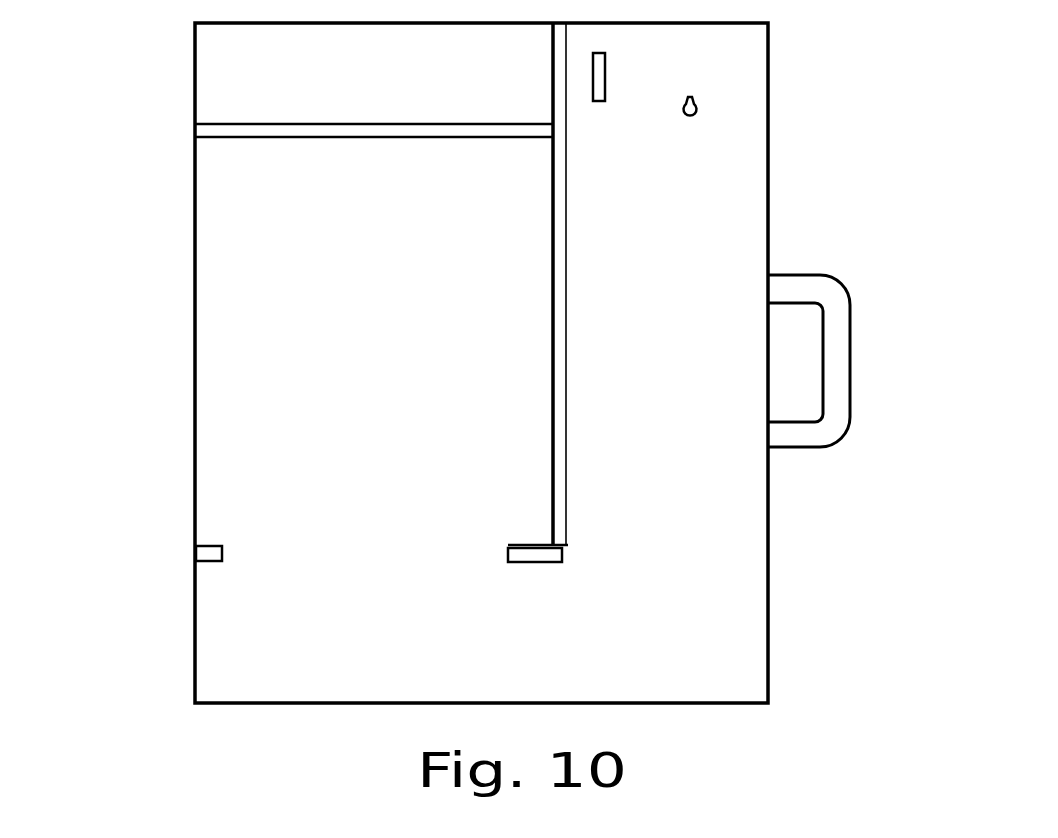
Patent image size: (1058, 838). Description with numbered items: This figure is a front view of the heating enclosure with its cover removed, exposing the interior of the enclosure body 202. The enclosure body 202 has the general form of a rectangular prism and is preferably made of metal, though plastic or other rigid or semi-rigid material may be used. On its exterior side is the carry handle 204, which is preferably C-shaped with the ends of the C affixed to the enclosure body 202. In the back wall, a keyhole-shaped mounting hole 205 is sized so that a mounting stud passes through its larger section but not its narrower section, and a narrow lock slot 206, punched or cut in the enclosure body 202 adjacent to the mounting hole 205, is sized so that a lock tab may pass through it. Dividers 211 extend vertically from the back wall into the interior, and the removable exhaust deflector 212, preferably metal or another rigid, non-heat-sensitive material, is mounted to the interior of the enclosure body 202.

The enclosure body 202 is at (770, 678).
The carry handle 204 is at (837, 425).
The mounting holes 205 is at (700, 105).
The lock slots 206 is at (603, 76).
The dividers 211 is at (563, 362).
The exhaust deflector 212 is at (236, 89).